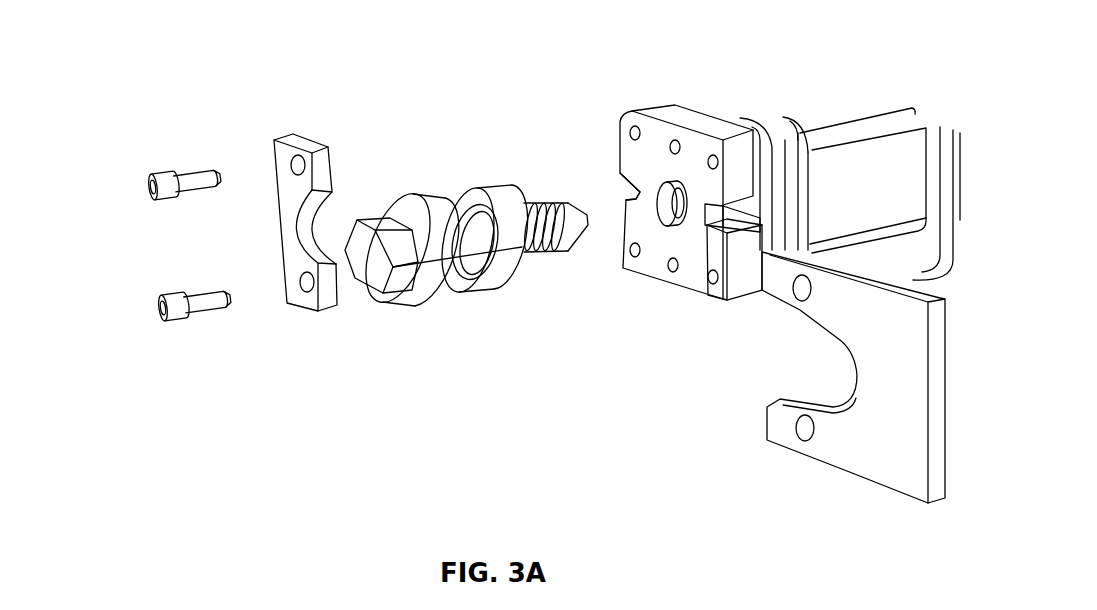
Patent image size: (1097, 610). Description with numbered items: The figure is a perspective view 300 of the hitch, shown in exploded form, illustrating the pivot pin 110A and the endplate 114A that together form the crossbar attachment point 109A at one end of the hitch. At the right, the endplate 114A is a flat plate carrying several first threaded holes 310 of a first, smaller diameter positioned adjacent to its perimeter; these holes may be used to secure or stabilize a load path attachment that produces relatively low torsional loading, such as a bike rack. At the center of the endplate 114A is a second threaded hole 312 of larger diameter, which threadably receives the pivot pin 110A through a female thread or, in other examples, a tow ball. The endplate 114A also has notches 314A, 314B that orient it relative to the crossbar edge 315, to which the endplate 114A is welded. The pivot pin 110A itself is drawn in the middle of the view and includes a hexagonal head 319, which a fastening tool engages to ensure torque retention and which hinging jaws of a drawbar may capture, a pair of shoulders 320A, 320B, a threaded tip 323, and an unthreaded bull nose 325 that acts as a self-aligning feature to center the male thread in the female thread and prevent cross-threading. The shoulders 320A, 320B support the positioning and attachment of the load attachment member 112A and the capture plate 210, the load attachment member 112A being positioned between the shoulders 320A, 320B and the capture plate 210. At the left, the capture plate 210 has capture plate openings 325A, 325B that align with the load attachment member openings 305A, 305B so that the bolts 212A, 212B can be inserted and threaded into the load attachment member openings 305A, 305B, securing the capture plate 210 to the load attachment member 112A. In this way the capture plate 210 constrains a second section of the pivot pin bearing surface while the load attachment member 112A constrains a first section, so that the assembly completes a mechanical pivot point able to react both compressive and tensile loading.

The perspective view 300 is at (137, 62).
The crossbar attachment point 109A is at (417, 452).
The pivot pin 110A is at (377, 290).
The load attachment member 112A is at (848, 472).
The endplate 114A is at (693, 120).
The capture plate 210 is at (293, 290).
The bolt 212A is at (148, 193).
The bolt 212B is at (152, 305).
The load attachment member opening 305A is at (805, 437).
The load attachment member opening 305B is at (807, 278).
The first threaded hole 310 is at (632, 113).
The second threaded hole 312 is at (668, 175).
The notch 314A is at (638, 197).
The notch 314B is at (708, 222).
The crossbar edge 315 is at (748, 218).
The head 319 is at (362, 220).
The shoulder 320A is at (413, 302).
The shoulder 320B is at (483, 280).
The threaded tip 323 is at (540, 198).
The bull nose 325 is at (583, 230).
The capture plate opening 325A is at (297, 160).
The capture plate opening 325B is at (307, 280).